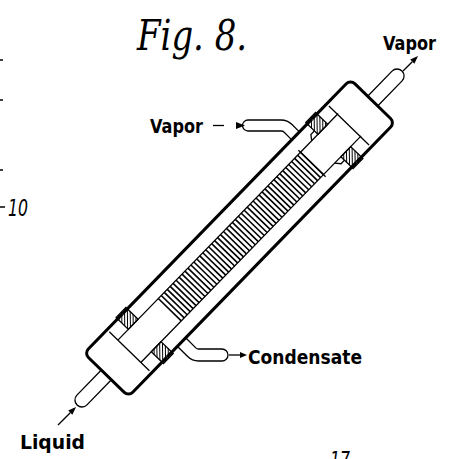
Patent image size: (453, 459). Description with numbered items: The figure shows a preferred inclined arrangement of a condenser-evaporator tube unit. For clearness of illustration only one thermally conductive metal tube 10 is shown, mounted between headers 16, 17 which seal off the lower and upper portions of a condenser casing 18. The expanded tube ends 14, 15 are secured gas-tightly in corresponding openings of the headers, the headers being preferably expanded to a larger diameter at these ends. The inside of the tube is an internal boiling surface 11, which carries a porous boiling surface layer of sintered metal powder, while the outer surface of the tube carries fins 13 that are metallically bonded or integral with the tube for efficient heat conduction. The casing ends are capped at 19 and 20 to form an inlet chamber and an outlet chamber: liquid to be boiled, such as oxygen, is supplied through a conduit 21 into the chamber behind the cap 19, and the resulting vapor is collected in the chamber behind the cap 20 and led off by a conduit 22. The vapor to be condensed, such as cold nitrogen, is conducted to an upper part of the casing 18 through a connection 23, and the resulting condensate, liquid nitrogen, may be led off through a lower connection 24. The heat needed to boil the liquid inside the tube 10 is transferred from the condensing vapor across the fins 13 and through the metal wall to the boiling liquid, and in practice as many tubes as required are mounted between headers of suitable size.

The thermally conductive metal tube 10 is at (257, 184).
The internal boiling surface 11 is at (328, 170).
The fins 13 is at (288, 211).
The tube end 14 is at (327, 117).
The tube end 15 is at (147, 371).
The header 16 is at (367, 152).
The header 17 is at (136, 306).
The condenser casing 18 is at (175, 268).
The casing end cap 19 is at (104, 338).
The casing end cap 20 is at (393, 119).
The liquid supply conduit 21 is at (100, 388).
The vapor outlet conduit 22 is at (381, 90).
The vapor inlet connection 23 is at (258, 118).
The condensate outlet connection 24 is at (208, 362).